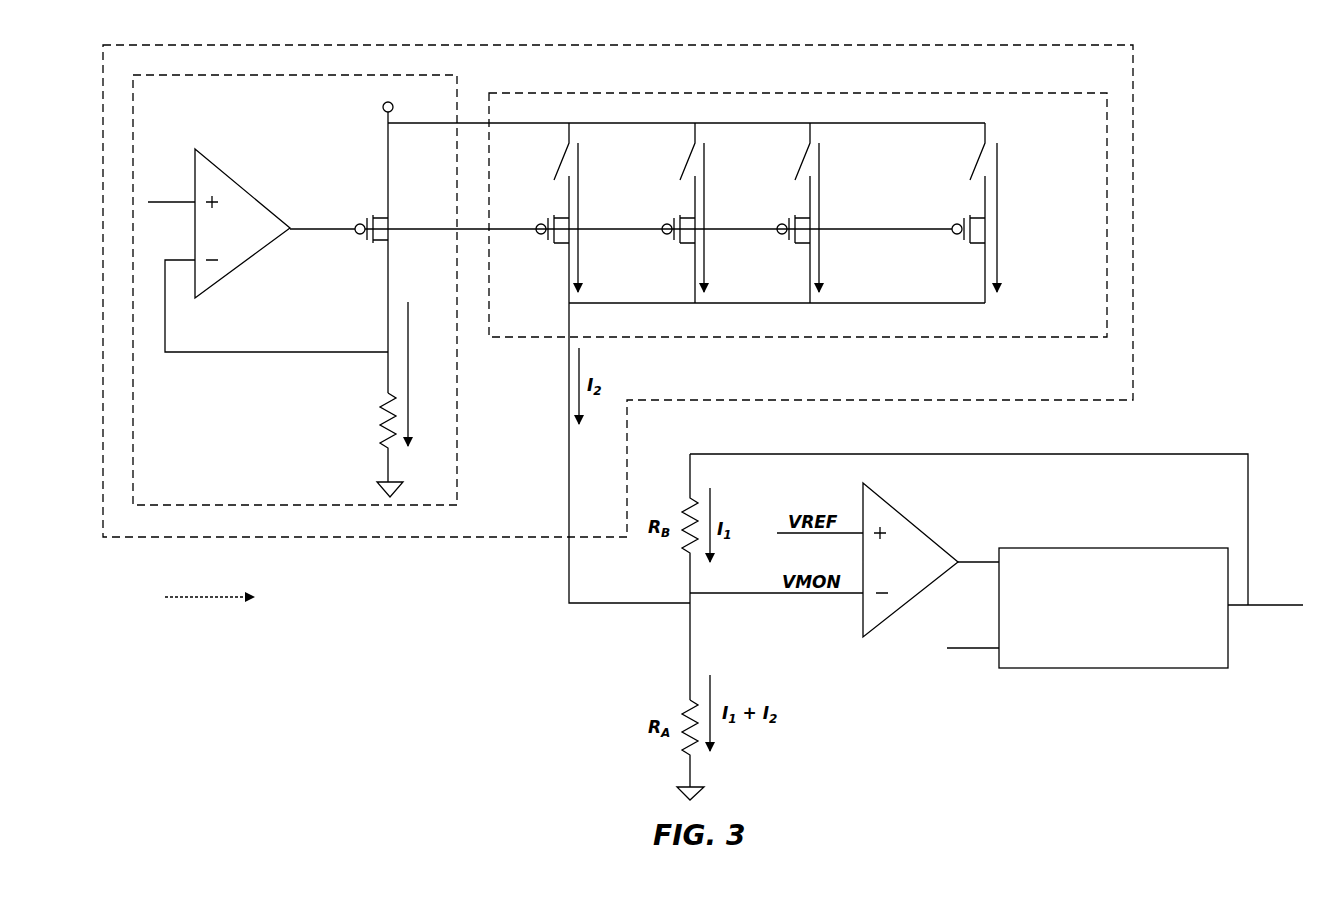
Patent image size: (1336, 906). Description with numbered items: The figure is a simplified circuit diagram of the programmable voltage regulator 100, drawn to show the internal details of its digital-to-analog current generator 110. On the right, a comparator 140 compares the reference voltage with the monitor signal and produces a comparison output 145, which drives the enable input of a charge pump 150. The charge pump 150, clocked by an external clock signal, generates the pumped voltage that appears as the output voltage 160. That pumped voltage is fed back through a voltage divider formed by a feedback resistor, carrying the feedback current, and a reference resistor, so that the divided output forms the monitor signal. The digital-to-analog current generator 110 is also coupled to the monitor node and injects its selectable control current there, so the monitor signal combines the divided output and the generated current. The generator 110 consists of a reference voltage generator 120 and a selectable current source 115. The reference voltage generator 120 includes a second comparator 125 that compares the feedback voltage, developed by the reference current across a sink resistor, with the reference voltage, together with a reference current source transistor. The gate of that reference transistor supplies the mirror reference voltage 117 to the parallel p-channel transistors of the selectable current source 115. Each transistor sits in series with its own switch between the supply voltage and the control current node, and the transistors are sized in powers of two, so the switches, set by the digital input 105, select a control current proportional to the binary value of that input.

The programmable voltage regulator 100 is at (1196, 127).
The digital input 105 is at (198, 598).
The digital-to-analog current generator 110 is at (1135, 323).
The selectable current source 115 is at (847, 340).
The mirror reference voltage 117 is at (408, 230).
The reference voltage generator 120 is at (457, 476).
The second comparator 125 is at (243, 190).
The comparator 140 is at (907, 518).
The comparison output 145 is at (975, 562).
The charge pump 150 is at (1102, 547).
The output voltage 160 is at (1263, 605).